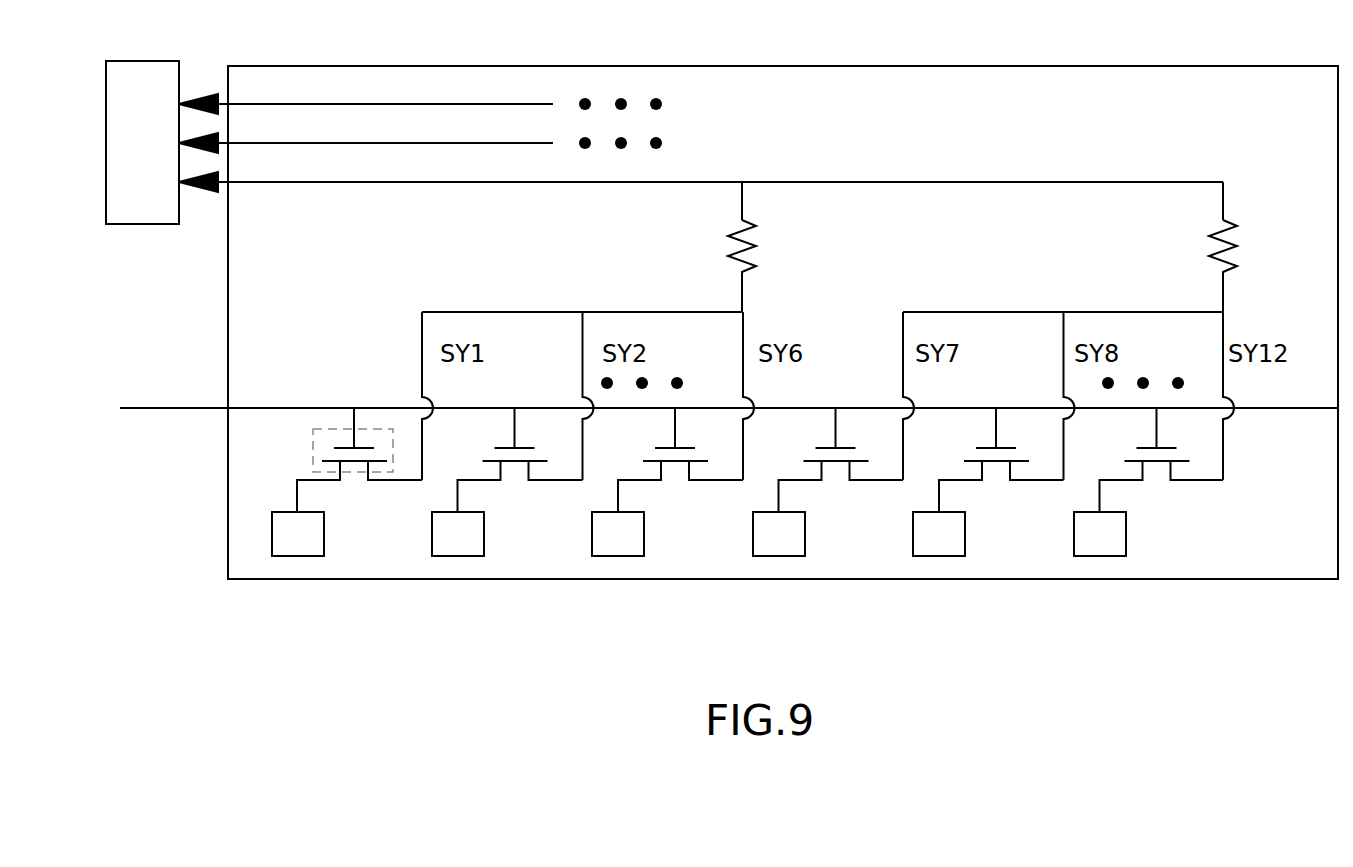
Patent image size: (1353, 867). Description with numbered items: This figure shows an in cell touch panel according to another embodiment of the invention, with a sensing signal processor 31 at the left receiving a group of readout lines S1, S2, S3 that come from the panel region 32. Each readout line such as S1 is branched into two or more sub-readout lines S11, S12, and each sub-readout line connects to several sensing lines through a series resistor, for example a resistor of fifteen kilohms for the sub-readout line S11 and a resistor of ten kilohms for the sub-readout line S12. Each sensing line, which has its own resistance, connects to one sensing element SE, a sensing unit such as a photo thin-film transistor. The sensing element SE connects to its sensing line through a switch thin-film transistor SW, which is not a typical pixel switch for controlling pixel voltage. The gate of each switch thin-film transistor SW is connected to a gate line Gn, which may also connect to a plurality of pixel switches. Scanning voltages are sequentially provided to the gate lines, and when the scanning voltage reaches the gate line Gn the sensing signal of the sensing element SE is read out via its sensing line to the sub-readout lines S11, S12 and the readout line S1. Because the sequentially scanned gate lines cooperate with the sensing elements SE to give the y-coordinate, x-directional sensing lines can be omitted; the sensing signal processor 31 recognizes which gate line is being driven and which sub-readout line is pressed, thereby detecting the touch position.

The sensing signal processor 31 is at (142, 142).
The sensing array panel 32 is at (228, 330).
The readout line S1 is at (701, 172).
The readout line S2 is at (366, 133).
The readout line S3 is at (366, 93).
The sub-readout line S11 is at (711, 247).
The sub-readout line S12 is at (1188, 247).
The gate line Gn is at (728, 425).
The switch thin-film transistor SW is at (313, 449).
The sensing element SE is at (699, 534).